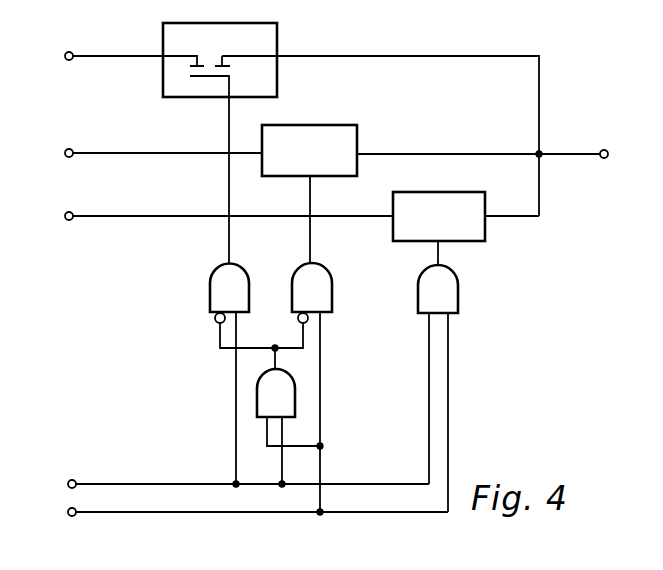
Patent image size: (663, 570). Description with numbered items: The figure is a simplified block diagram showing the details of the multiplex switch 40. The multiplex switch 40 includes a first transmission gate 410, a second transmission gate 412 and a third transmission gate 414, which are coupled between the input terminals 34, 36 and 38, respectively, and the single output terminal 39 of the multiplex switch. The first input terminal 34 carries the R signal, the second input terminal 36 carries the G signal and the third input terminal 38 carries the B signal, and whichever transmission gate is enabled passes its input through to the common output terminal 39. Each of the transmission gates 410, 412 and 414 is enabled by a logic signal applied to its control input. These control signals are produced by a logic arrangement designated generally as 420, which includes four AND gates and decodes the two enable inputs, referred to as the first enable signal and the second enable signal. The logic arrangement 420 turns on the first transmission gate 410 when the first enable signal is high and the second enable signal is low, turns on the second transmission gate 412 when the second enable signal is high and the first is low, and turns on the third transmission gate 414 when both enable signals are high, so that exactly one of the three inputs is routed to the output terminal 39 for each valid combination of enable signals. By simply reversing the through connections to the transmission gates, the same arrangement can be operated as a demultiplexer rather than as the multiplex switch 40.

The input terminal 34 is at (79, 42).
The input terminal 36 is at (79, 139).
The input terminal 38 is at (79, 202).
The output terminal 39 is at (607, 150).
The multiplex switch 40 is at (338, 269).
The first transmission gate 410 is at (277, 57).
The second transmission gate 412 is at (364, 130).
The third transmission gate 414 is at (491, 196).
The logic arrangement 420 is at (180, 384).